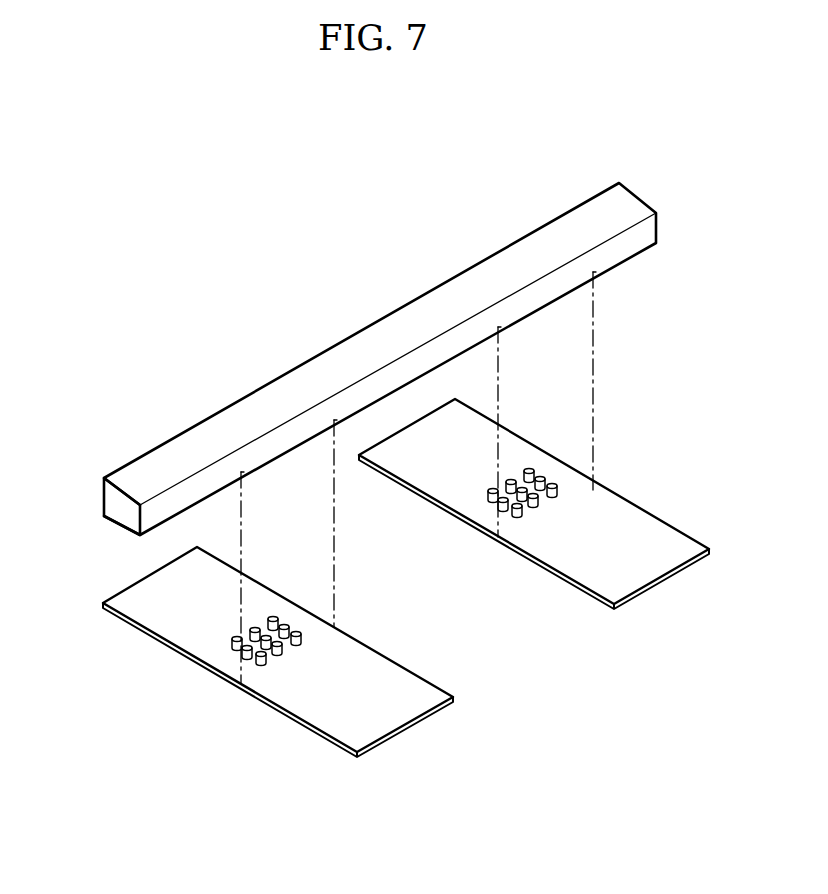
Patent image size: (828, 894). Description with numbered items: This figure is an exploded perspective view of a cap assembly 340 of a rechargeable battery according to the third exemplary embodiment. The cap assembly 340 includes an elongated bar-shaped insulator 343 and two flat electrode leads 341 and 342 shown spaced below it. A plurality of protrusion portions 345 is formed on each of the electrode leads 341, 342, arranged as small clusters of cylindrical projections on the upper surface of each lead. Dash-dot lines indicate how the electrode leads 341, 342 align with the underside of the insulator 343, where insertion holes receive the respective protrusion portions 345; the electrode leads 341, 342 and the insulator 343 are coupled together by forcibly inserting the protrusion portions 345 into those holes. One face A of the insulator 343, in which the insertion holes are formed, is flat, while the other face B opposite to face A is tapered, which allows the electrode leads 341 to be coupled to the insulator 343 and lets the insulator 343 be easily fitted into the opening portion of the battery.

The cap assembly 340 is at (118, 336).
The electrode lead 341 is at (597, 487).
The electrode lead 342 is at (362, 650).
The insulator 343 is at (105, 498).
The protrusion portions 345 is at (247, 658).
The face of the insulator A is at (127, 529).
The other face of the insulator B is at (129, 495).